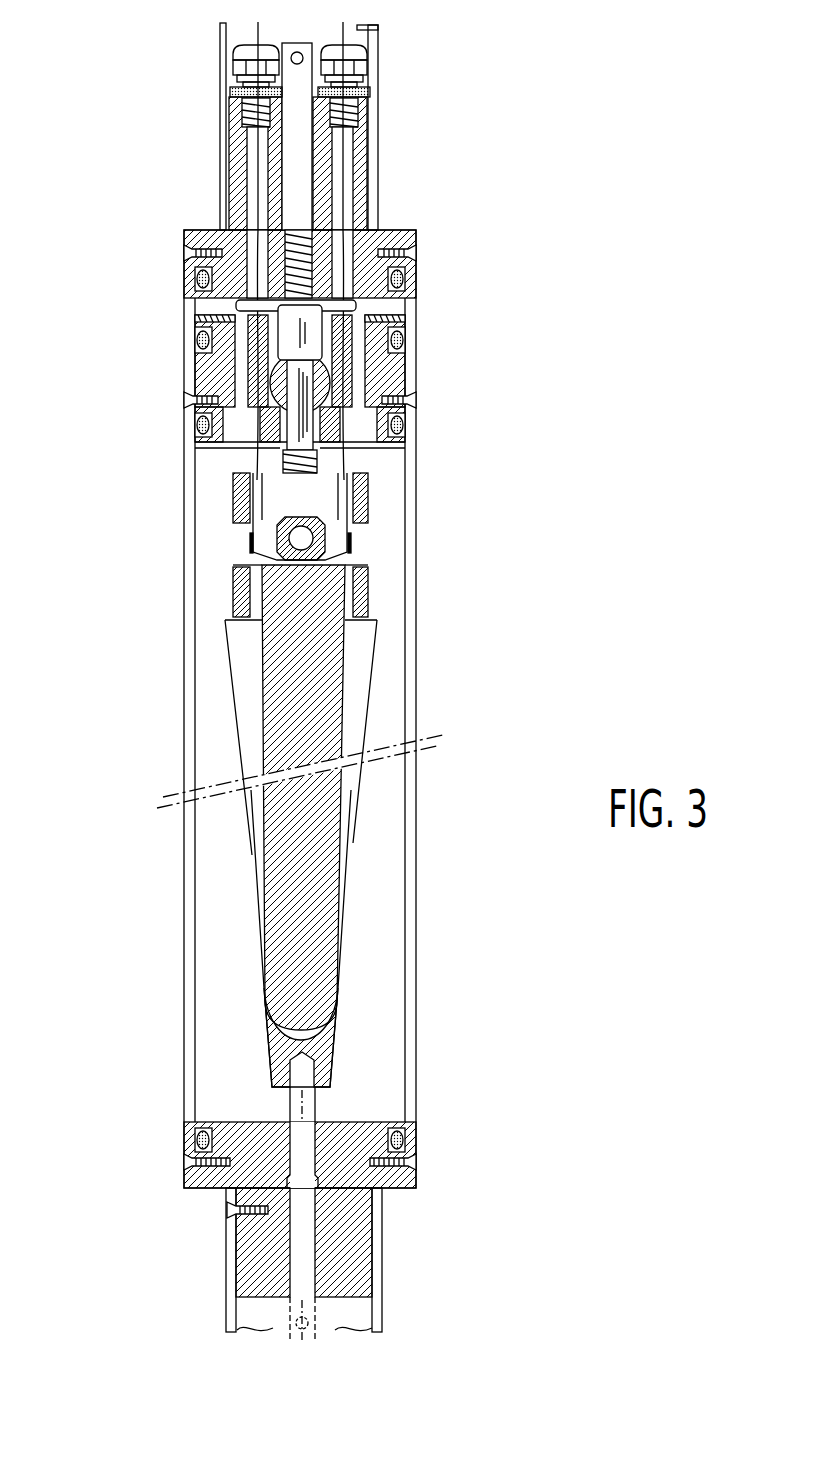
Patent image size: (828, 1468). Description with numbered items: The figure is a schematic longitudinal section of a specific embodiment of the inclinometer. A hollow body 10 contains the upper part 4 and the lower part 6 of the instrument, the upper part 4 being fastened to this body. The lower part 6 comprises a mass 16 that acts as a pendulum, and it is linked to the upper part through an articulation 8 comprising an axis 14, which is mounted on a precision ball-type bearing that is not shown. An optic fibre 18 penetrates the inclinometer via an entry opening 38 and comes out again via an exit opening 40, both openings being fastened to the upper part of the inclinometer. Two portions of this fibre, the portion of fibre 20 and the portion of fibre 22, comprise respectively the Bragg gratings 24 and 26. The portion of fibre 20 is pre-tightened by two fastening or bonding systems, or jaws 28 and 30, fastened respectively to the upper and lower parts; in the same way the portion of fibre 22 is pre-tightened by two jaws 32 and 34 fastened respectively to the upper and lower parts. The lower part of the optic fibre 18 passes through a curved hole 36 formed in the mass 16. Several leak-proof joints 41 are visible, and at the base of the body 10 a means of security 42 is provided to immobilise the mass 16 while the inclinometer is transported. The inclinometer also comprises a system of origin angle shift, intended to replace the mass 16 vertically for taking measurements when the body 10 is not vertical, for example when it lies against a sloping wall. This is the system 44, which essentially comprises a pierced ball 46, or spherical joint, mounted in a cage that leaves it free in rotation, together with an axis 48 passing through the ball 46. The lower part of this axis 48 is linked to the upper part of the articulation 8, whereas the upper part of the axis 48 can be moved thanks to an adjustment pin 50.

The upper part 4 is at (395, 221).
The lower part 6 is at (242, 893).
The articulation 8 is at (322, 492).
The hollow body 10 is at (192, 757).
The axis 14 is at (302, 540).
The mass 16 is at (318, 953).
The optic fibre 18 is at (255, 192).
The portion of fibre 20 is at (350, 558).
The portion of fibre 22 is at (253, 558).
The Bragg grating 24 is at (350, 542).
The Bragg grating 26 is at (250, 541).
The jaw 28 is at (368, 493).
The jaw 30 is at (368, 597).
The jaw 32 is at (235, 495).
The jaw 34 is at (235, 600).
The curved hole 36 is at (338, 978).
The entry opening 38 is at (352, 52).
The exit opening 40 is at (247, 50).
The leak-proof joints 41 is at (407, 338).
The means of security 42 is at (307, 1247).
The system of origin angle shift 44 is at (285, 305).
The pierced ball 46 is at (277, 382).
The axis 48 is at (300, 422).
The adjustment pin 50 is at (296, 147).